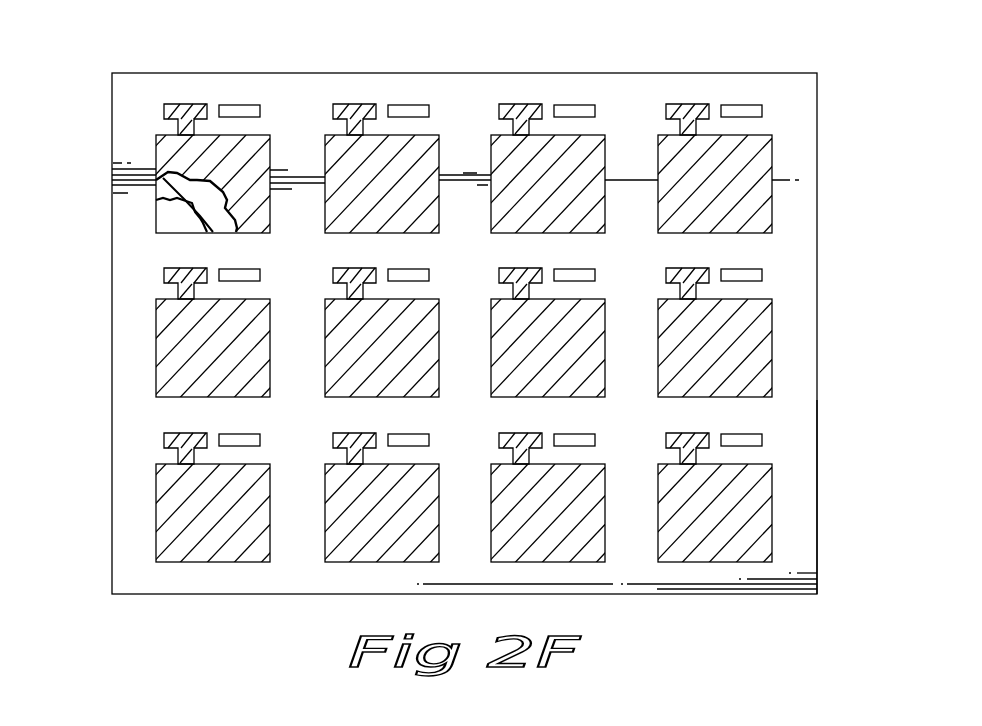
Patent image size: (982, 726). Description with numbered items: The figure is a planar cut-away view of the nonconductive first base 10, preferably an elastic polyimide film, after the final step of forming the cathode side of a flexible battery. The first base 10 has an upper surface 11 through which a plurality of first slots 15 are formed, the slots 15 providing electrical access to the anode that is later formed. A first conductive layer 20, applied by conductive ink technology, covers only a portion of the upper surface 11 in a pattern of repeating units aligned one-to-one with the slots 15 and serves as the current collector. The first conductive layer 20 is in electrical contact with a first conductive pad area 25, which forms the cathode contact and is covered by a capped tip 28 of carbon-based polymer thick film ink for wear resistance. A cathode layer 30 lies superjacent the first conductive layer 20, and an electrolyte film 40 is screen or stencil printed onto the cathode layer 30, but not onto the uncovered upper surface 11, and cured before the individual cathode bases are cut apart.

The first base 10 is at (818, 270).
The upper surface 11 is at (780, 420).
The first slots 15 is at (240, 105).
The first conductive layer 20 is at (172, 217).
The first conductive pad area 25 is at (194, 101).
The capped tip 28 is at (165, 112).
The cathode layer 30 is at (217, 213).
The electrolyte film 40 is at (240, 157).